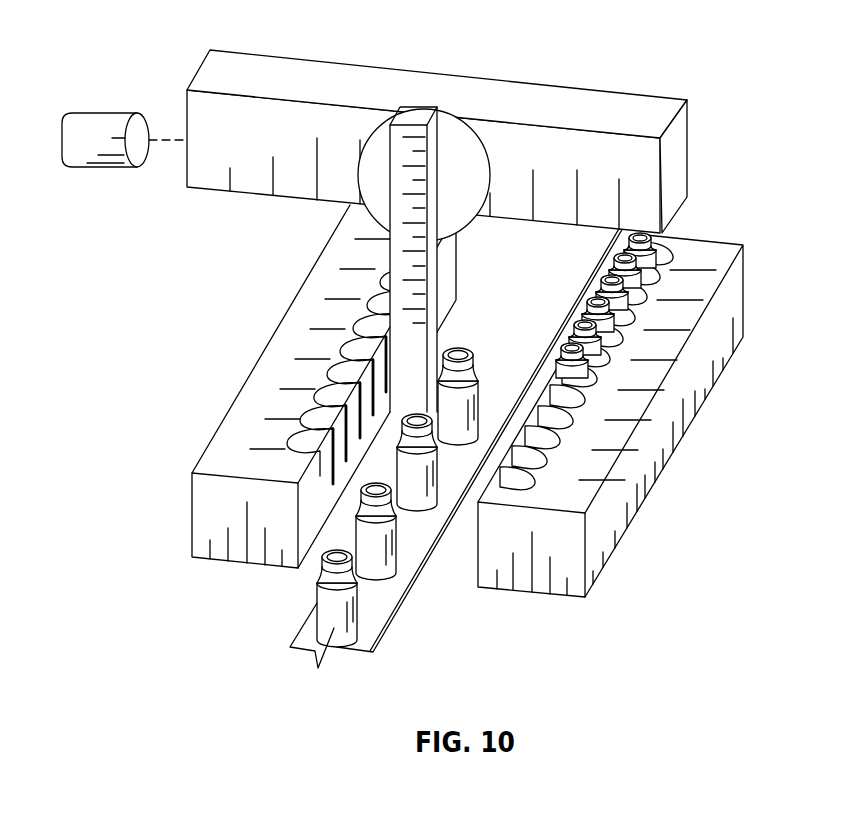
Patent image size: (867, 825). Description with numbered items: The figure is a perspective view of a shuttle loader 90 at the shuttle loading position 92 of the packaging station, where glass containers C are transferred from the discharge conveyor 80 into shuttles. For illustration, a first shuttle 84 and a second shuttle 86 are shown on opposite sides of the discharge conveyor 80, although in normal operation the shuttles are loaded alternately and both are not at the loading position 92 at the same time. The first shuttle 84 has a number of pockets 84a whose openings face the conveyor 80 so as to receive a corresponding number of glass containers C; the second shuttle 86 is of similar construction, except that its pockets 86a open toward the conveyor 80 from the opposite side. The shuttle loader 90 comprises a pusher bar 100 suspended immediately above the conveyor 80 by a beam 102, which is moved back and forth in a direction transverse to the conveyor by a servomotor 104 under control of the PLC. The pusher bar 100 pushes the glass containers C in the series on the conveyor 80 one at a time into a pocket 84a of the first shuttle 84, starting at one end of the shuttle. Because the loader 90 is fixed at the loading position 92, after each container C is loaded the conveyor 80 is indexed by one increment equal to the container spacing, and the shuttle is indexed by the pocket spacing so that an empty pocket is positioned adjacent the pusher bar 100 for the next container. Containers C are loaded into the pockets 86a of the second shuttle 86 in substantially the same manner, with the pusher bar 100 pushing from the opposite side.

The discharge conveyor 80 is at (360, 618).
The first shuttle 84 is at (610, 444).
The pockets 84a is at (580, 400).
The second shuttle 86 is at (303, 386).
The pockets 86a is at (338, 349).
The shuttle loader 90 is at (371, 218).
The shuttle loading position 92 is at (250, 650).
The pusher bar 100 is at (437, 268).
The beam 102 is at (262, 173).
The servomotor 104 is at (90, 168).
The glass containers C is at (642, 282).